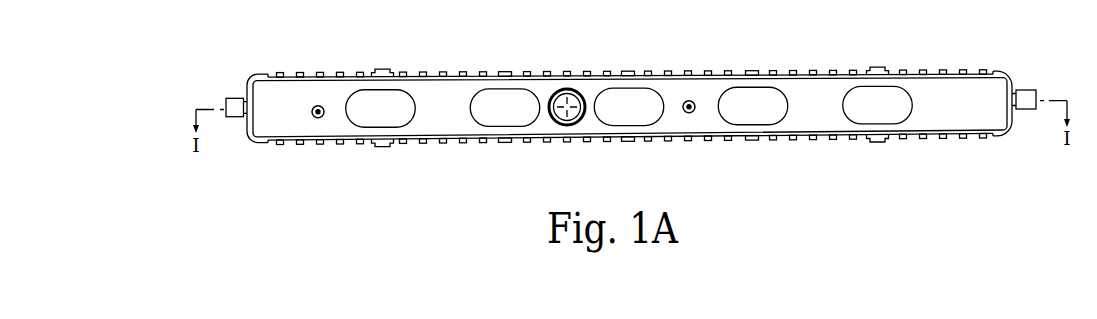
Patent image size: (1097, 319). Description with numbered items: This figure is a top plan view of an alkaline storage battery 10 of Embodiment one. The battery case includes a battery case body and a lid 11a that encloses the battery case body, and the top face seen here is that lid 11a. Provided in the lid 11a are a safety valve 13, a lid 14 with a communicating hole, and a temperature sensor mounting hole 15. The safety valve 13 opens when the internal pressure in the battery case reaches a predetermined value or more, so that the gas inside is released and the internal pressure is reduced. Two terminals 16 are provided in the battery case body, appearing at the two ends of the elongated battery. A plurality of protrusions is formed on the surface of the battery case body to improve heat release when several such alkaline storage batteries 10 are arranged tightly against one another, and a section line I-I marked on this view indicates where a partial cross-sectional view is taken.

The alkaline storage battery 10 is at (237, 50).
The lid 11a is at (268, 87).
The safety valve 13 is at (568, 97).
The lid with a communicating hole 14 is at (397, 120).
The temperature sensor mounting hole 15 is at (318, 118).
The terminal 16 is at (239, 103).